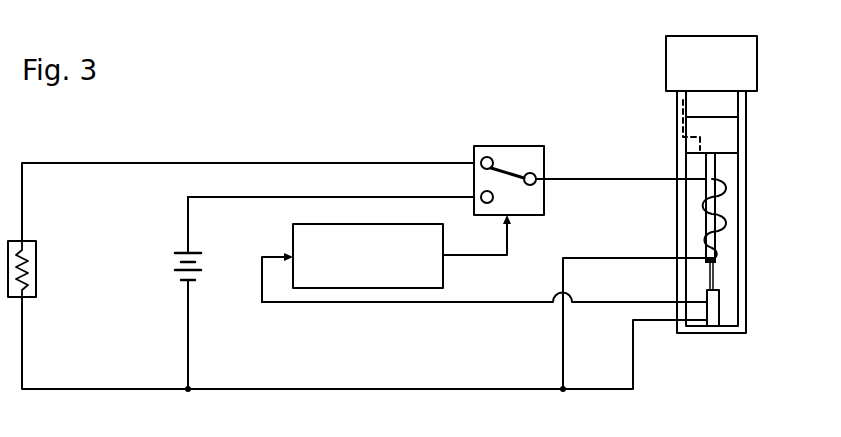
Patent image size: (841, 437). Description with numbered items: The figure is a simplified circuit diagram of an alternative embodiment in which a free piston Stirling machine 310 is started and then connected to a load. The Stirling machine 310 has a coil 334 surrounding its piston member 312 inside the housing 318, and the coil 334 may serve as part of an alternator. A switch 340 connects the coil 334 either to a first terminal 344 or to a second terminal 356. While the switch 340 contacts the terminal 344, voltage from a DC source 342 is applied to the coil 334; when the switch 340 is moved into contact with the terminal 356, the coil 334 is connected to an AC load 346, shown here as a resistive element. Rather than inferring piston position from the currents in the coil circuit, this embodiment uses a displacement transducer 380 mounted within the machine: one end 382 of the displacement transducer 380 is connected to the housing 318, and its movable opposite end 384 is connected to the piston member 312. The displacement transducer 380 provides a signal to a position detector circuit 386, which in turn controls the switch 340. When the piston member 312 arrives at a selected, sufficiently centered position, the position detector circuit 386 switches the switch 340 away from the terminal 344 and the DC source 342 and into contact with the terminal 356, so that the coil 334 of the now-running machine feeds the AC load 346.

The Stirling machine 310 is at (634, 127).
The piston member 312 is at (713, 166).
The housing 318 is at (746, 258).
The coil 334 is at (697, 208).
The switch 340 is at (515, 146).
The DC source 342 is at (176, 274).
The terminal 344 is at (479, 201).
The AC load 346 is at (36, 247).
The terminal 356 is at (487, 157).
The displacement transducer 380 is at (719, 312).
The end of displacement transducer 382 is at (713, 327).
The movable opposite end of displacement transducer 384 is at (717, 274).
The position detector circuit 386 is at (443, 281).